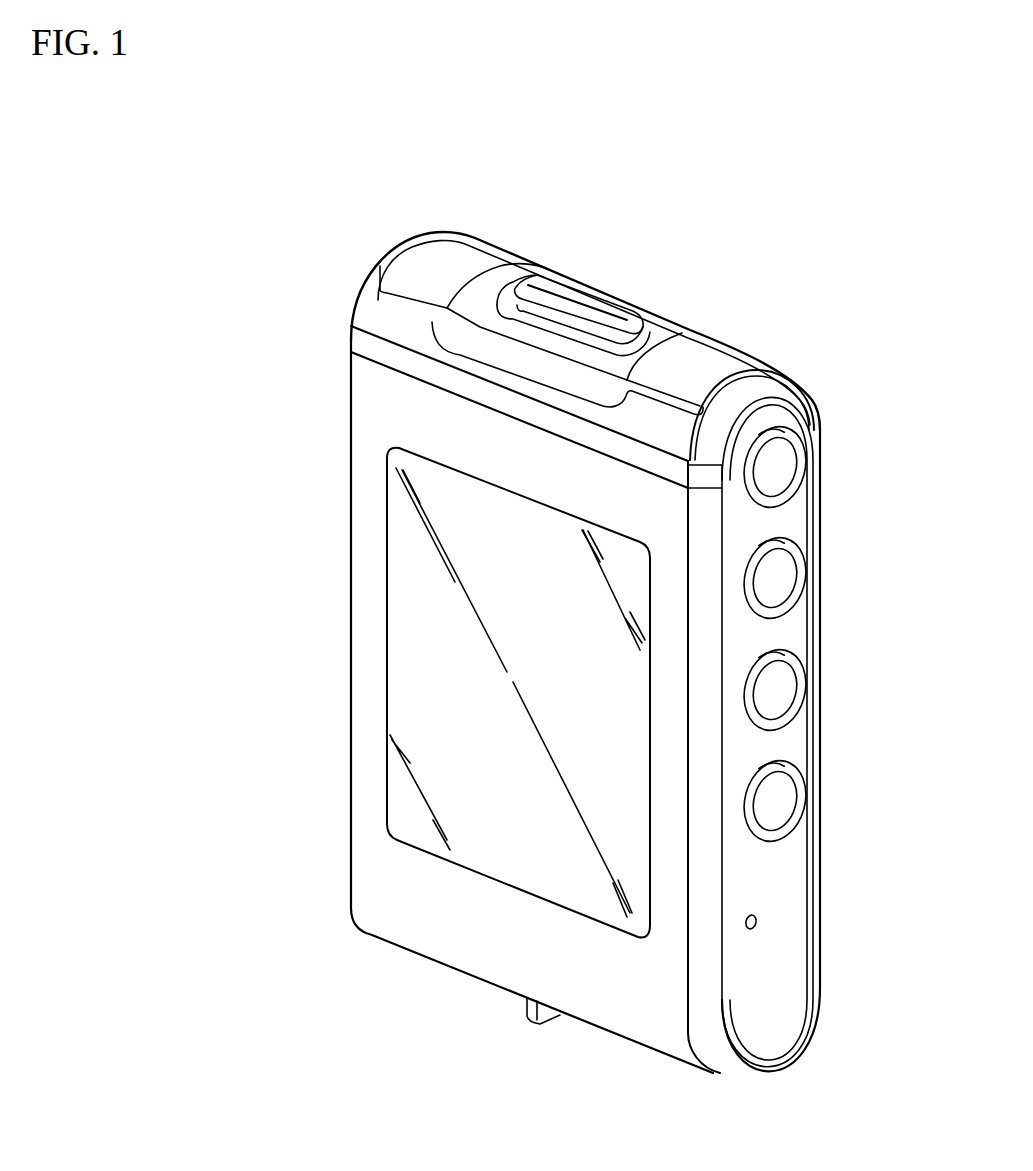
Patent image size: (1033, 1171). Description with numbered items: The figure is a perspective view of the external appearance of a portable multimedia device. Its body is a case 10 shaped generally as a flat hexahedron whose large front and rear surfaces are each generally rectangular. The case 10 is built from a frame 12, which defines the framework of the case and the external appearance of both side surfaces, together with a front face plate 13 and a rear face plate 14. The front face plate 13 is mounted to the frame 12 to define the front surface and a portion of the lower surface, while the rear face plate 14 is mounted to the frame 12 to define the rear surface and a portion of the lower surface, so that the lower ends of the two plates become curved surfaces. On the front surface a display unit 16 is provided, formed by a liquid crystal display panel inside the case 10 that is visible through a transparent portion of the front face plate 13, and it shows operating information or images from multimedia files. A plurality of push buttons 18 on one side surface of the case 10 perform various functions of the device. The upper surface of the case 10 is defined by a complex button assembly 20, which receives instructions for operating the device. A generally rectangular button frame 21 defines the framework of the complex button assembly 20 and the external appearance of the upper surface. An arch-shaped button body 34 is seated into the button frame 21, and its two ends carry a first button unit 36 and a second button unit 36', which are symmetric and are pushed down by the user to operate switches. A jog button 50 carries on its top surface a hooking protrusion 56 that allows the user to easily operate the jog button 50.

The case 10 is at (277, 750).
The frame 12 is at (775, 1006).
The front face plate 13 is at (485, 940).
The rear face plate 14 is at (820, 876).
The display unit 16 is at (407, 603).
The push buttons 18 is at (780, 467).
The complex button assembly 20 is at (713, 282).
The button frame 21 is at (373, 313).
The button body 34 is at (465, 240).
The first button unit 36 is at (478, 289).
The second button unit 36' is at (729, 344).
The jog button 50 is at (498, 307).
The hooking protrusion 56 is at (587, 293).